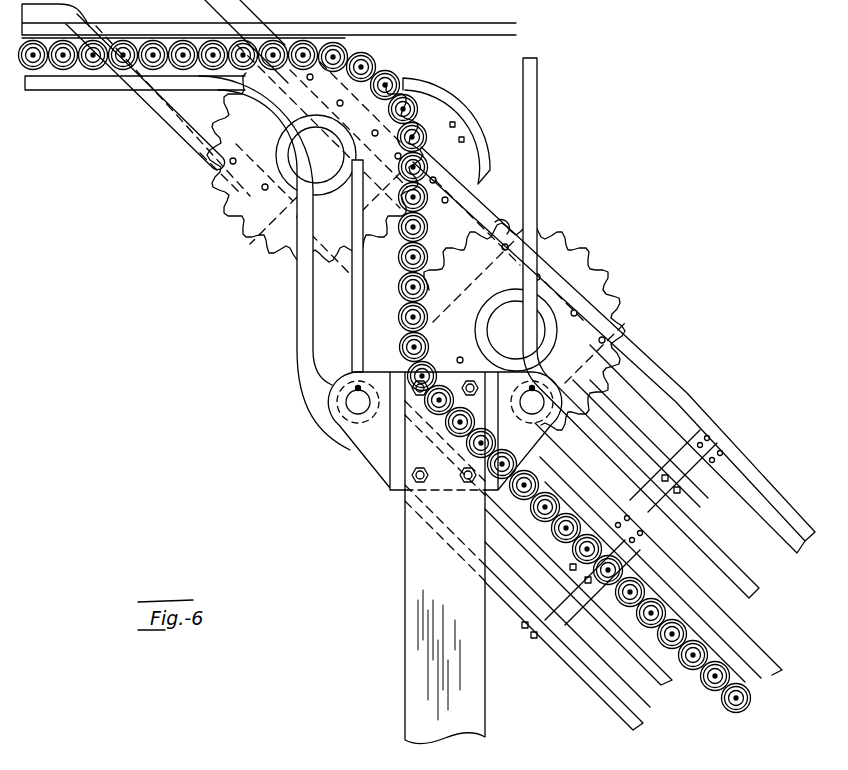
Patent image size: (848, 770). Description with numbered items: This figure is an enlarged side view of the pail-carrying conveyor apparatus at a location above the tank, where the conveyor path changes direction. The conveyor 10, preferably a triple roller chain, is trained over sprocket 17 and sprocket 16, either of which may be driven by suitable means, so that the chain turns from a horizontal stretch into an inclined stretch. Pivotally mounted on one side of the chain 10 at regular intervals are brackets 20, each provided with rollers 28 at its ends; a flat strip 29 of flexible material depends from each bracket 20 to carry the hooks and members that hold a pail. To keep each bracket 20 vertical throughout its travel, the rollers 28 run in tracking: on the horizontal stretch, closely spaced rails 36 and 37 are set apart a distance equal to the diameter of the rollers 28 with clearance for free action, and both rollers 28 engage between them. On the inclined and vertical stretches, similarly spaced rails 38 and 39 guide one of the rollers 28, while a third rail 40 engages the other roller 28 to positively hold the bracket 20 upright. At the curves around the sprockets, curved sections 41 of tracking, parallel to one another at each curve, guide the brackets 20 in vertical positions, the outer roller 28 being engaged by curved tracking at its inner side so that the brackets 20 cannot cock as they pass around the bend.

The conveyor 10 is at (722, 697).
The sprocket 16 is at (580, 268).
The sprocket 17 is at (230, 180).
The bracket 20 is at (385, 440).
The roller 28 is at (338, 422).
The flat strip 29 is at (420, 660).
The rail 36 is at (88, 83).
The rail 37 is at (133, 29).
The rail 38 is at (353, 272).
The rail 39 is at (297, 283).
The third rail 40 is at (538, 148).
The curved section of tracking 41 is at (280, 120).